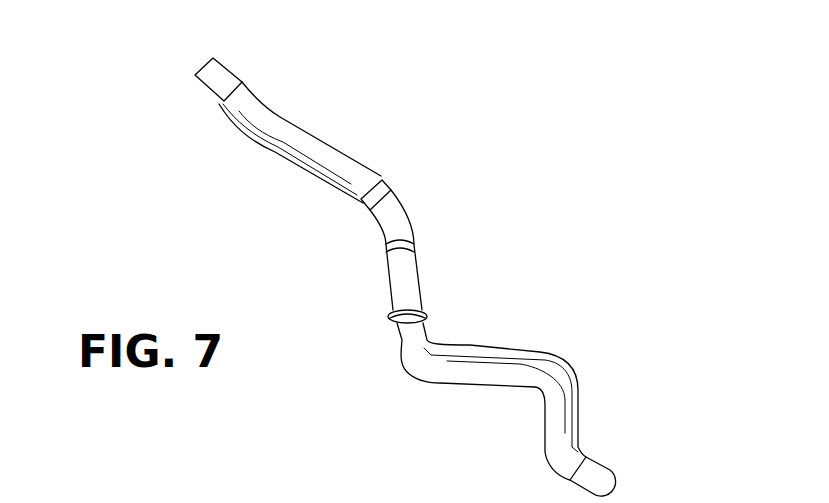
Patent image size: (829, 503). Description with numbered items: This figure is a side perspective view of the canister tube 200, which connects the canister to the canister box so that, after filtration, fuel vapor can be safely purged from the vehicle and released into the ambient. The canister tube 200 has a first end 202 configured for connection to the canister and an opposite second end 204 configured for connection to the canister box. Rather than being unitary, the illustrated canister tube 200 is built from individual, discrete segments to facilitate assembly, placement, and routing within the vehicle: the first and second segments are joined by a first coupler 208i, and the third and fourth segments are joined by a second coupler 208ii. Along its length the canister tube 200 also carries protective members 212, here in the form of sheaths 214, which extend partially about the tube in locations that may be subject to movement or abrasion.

The canister tube 200 is at (371, 339).
The first end 202 is at (592, 472).
The second end 204 is at (220, 78).
The first coupler 208i is at (397, 188).
The second coupler 208ii is at (422, 318).
The protective member 212 is at (309, 130).
The sheath 214 is at (340, 160).